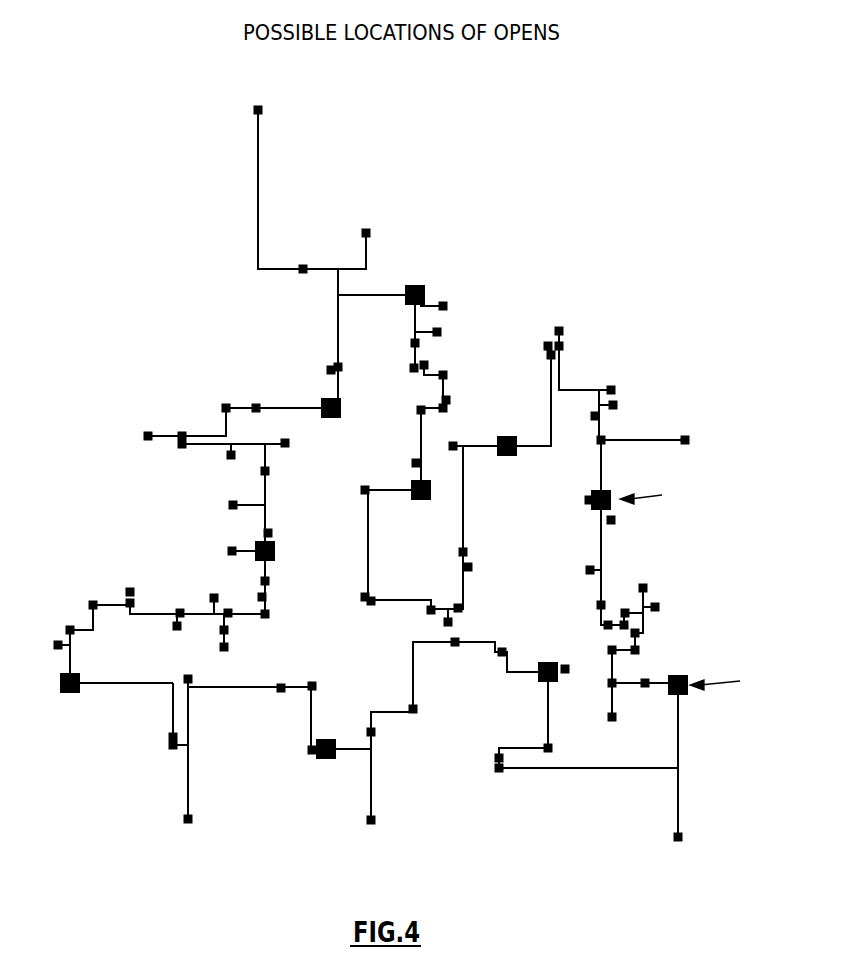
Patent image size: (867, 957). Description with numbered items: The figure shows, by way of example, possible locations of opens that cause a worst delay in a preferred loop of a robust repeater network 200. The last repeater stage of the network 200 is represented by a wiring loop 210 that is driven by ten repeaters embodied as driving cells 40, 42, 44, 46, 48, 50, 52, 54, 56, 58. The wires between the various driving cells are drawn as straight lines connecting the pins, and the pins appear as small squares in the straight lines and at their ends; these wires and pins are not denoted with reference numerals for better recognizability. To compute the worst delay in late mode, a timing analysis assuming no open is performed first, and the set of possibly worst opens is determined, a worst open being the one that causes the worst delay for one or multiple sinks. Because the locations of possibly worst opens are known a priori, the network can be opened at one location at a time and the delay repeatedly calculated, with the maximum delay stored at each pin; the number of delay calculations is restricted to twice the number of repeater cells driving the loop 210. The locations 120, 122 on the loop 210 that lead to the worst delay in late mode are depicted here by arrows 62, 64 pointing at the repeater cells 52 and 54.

The driving cell 40 is at (415, 285).
The driving cell 42 is at (331, 418).
The driving cell 44 is at (275, 556).
The driving cell 46 is at (72, 694).
The driving cell 48 is at (324, 760).
The driving cell 50 is at (546, 660).
The driving cell 52 is at (682, 690).
The driving cell 54 is at (605, 498).
The driving cell 56 is at (506, 436).
The driving cell 58 is at (420, 501).
The arrow 62 is at (722, 683).
The arrow 64 is at (648, 500).
The location 120 is at (687, 676).
The location 122 is at (607, 496).
The robust repeater network 200 is at (397, 474).
The wiring loop 210 is at (183, 197).